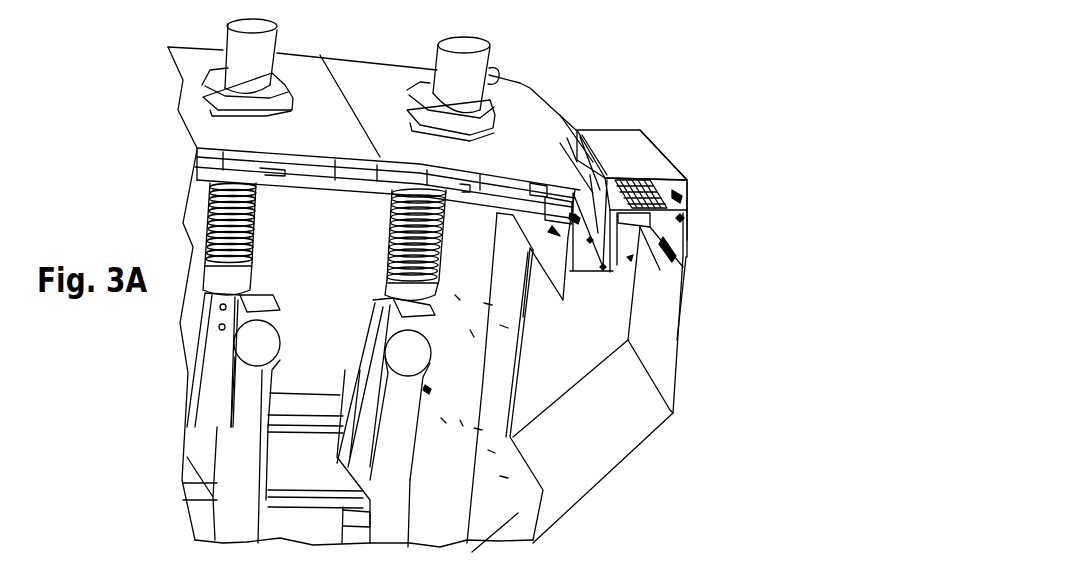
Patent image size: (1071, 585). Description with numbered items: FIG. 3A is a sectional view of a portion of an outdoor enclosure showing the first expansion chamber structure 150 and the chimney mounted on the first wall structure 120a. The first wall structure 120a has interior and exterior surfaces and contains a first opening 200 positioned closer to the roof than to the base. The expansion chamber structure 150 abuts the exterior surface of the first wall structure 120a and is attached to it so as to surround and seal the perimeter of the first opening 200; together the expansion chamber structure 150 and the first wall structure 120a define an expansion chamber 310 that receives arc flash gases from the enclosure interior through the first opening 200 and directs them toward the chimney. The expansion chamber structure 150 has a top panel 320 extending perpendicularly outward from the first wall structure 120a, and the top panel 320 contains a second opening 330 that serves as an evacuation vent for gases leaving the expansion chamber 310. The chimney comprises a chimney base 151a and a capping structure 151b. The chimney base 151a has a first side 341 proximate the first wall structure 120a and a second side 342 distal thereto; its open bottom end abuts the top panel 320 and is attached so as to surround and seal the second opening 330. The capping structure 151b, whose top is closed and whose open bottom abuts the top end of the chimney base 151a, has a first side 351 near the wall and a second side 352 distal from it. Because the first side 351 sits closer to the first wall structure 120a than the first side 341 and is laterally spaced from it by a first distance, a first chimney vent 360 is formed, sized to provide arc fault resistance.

The first wall structure 120a is at (350, 393).
The first expansion chamber structure 150 is at (728, 364).
The chimney base 151a is at (703, 232).
The capping structure 151b is at (703, 175).
The first opening 200 is at (522, 287).
The expansion chamber 310 is at (567, 352).
The top panel 320 is at (583, 250).
The second opening 330 is at (623, 255).
The first side of chimney base 341 is at (587, 222).
The second side of chimney base 342 is at (673, 233).
The first side of capping structure 351 is at (580, 137).
The second side of capping structure 352 is at (680, 193).
The first chimney vent 360 is at (607, 205).